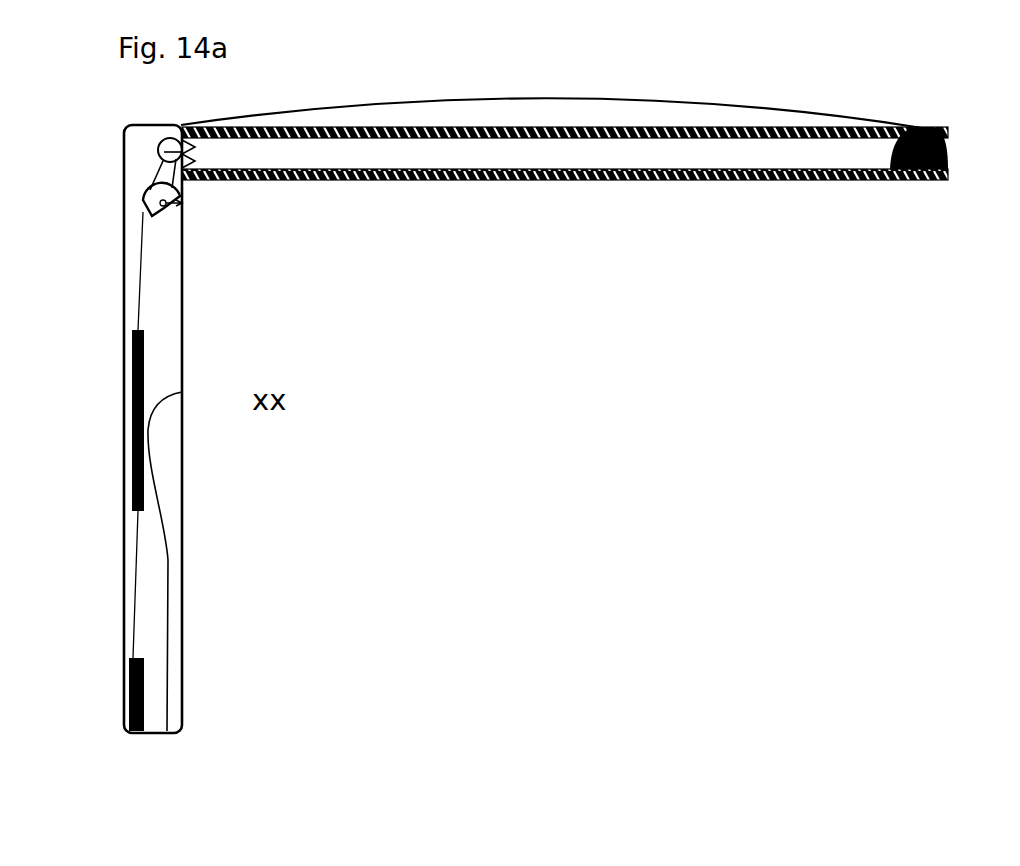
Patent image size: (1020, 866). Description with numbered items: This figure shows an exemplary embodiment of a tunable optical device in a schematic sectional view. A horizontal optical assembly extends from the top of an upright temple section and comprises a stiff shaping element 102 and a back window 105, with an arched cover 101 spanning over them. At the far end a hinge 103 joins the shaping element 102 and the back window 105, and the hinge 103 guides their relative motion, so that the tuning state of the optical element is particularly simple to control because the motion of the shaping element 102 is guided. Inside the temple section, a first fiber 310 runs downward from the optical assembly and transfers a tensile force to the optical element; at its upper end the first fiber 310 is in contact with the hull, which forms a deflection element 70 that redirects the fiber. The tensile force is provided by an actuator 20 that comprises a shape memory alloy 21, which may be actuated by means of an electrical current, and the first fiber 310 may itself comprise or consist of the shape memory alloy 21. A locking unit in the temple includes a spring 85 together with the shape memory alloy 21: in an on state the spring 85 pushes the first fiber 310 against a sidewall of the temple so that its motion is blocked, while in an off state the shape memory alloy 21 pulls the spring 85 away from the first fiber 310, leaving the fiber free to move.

The deflection element 70 is at (160, 150).
The canopy fabric 101 is at (647, 98).
The shaping element 102 is at (553, 141).
The back window 105 is at (755, 181).
The hinge 103 is at (892, 181).
The first fiber 310 is at (140, 281).
The spring 85 is at (155, 410).
The shape memory alloy 21 is at (141, 603).
The actuator 20 is at (144, 695).